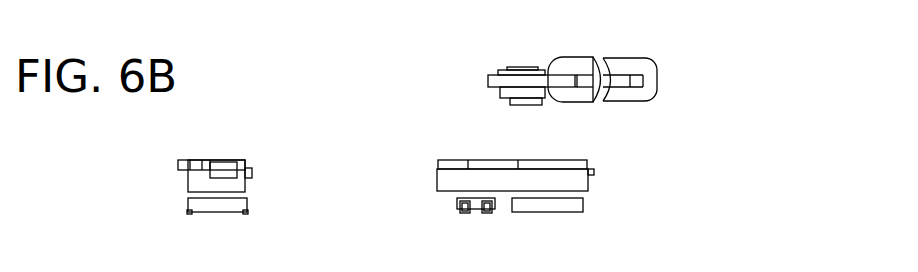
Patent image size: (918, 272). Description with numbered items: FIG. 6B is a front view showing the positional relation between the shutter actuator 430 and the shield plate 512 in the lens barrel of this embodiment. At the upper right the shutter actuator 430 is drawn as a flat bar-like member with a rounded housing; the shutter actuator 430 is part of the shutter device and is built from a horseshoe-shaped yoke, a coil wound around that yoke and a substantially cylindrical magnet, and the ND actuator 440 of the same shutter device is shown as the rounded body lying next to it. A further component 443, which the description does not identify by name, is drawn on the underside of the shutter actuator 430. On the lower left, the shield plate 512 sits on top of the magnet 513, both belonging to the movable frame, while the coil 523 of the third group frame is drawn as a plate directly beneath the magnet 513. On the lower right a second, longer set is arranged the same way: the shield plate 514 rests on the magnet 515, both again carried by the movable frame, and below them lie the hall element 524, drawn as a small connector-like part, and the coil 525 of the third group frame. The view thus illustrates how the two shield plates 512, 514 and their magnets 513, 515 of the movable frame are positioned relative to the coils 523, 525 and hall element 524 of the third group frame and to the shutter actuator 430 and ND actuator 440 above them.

The shutter actuator 430 is at (498, 78).
The ND actuator 440 is at (630, 56).
The lower block 443 is at (510, 93).
The shield plate 512 is at (180, 161).
The magnet 513 is at (196, 176).
The coil 523 is at (203, 204).
The shield plate 514 is at (558, 163).
The magnet 515 is at (558, 179).
The hall element 524 is at (478, 213).
The coil 525 is at (548, 204).